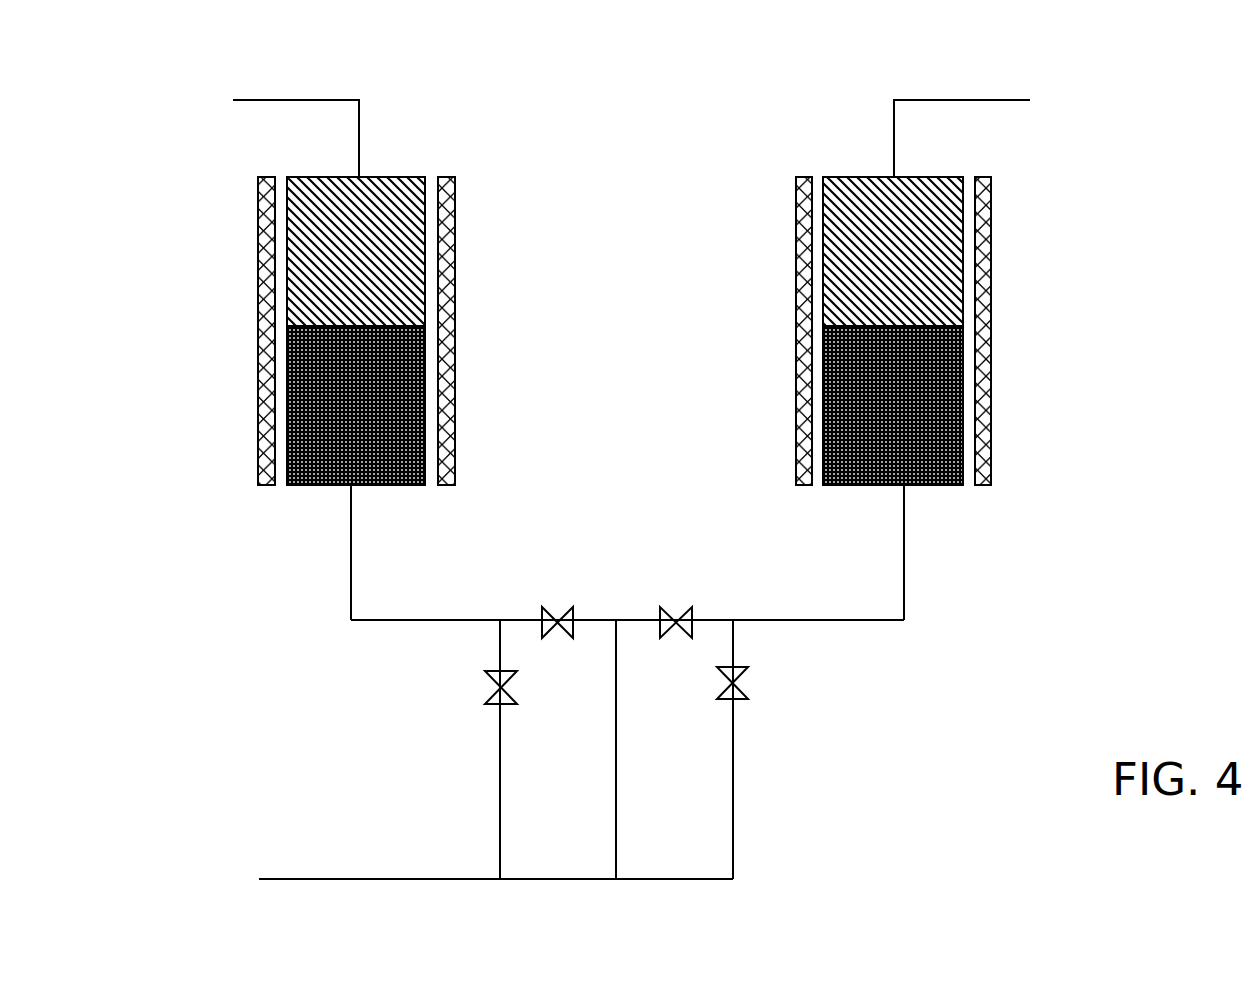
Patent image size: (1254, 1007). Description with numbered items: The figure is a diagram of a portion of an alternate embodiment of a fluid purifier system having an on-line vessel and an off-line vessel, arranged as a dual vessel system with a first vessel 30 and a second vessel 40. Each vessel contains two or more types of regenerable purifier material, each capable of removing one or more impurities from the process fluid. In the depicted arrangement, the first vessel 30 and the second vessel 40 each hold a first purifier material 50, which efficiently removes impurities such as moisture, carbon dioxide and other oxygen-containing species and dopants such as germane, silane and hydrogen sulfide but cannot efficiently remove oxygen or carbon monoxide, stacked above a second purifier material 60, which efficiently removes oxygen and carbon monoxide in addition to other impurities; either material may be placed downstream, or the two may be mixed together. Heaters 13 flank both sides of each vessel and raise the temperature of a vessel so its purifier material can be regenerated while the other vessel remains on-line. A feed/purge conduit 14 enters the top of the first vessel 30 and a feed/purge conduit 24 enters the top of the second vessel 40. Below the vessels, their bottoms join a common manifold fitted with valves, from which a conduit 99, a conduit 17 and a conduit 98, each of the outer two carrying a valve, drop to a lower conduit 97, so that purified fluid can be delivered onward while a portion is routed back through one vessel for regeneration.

The heater 13 is at (257, 398).
The feed/purge conduit 14 is at (279, 93).
The conduit 17 is at (616, 753).
The feed/purge conduit 24 is at (964, 94).
The first vessel 30 is at (218, 240).
The second vessel 40 is at (1027, 272).
The first purifier material 50 is at (863, 207).
The second purifier material 60 is at (312, 485).
The conduit 97 is at (289, 873).
The conduit 98 is at (733, 796).
The conduit 99 is at (500, 765).